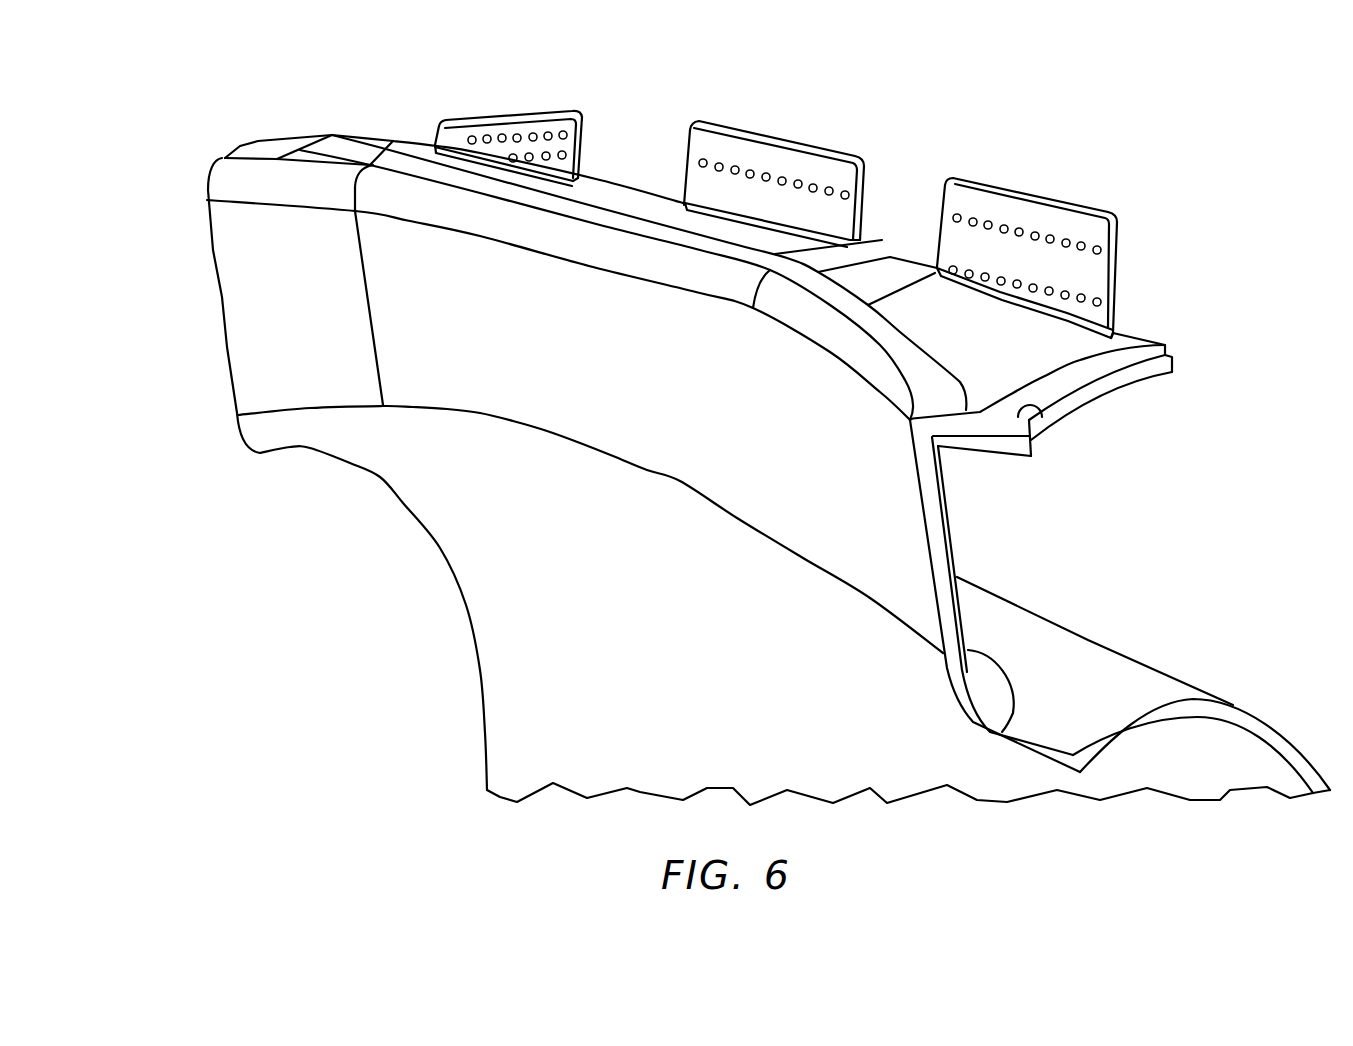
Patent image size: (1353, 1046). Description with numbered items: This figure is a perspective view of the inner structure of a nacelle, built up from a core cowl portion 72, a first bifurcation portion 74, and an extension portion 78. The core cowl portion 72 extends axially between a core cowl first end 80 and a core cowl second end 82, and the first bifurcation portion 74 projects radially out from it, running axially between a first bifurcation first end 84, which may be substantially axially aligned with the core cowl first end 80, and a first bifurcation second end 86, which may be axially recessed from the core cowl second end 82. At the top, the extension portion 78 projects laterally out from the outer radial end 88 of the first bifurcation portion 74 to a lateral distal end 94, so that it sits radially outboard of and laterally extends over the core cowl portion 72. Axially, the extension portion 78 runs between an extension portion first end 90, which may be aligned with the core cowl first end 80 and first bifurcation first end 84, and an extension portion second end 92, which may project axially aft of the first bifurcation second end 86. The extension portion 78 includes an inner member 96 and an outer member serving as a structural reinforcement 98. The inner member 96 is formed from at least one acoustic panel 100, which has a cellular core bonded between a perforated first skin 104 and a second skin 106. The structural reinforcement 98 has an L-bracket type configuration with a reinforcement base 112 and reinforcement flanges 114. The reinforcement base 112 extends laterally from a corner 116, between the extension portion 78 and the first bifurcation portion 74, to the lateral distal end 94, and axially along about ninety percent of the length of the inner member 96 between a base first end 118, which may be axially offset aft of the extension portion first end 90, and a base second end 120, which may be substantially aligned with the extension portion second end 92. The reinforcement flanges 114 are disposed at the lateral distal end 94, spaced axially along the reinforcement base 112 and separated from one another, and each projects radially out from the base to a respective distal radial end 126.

The core cowl portion 72 is at (908, 719).
The first bifurcation portion 74 is at (955, 550).
The extension portion 78 is at (1089, 382).
The core cowl first end 80 is at (478, 725).
The core cowl second end 82 is at (1303, 750).
The first bifurcation first end 84 is at (223, 323).
The first bifurcation second end 86 is at (955, 578).
The outer radial end 88 is at (221, 189).
The extension portion first end 90 is at (241, 145).
The extension portion second end 92 is at (1120, 388).
The lateral distal end 94 is at (1172, 360).
The inner member 96 is at (1101, 424).
The structural reinforcement 98 is at (1118, 330).
The acoustic panel 100 is at (1090, 405).
The perforated first skin 104 is at (1063, 438).
The second skin 106 is at (1017, 420).
The reinforcement base 112 is at (893, 278).
The reinforcement flanges 114 is at (780, 186).
The corner 116 is at (205, 186).
The base first end 118 is at (287, 140).
The base second end 120 is at (1170, 348).
The distal radial ends 126 is at (480, 118).